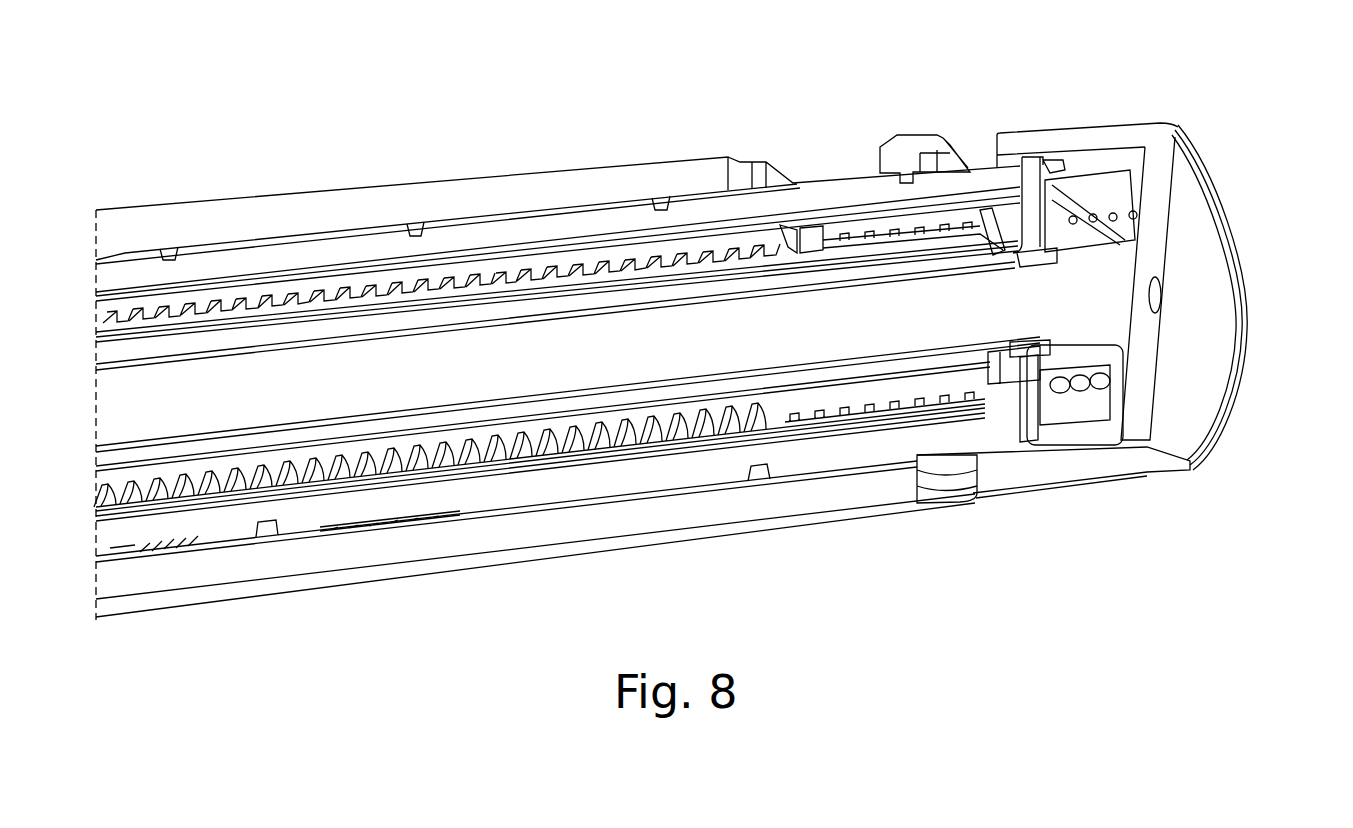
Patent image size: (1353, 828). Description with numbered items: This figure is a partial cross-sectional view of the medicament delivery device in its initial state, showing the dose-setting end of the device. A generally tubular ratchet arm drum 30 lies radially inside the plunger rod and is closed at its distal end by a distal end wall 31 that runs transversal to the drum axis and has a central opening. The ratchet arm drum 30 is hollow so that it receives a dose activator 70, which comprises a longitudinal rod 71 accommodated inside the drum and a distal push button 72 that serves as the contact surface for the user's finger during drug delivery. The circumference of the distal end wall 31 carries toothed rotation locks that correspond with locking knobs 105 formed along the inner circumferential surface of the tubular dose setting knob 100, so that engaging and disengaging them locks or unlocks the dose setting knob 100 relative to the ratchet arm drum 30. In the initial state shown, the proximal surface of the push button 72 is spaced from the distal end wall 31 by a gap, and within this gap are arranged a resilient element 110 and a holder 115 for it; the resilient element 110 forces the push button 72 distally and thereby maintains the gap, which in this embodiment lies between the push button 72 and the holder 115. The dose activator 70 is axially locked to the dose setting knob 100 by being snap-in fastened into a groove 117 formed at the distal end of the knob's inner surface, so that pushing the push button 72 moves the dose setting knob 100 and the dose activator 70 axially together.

The ratchet arm drum 30 is at (838, 268).
The distal end wall 31 is at (1005, 398).
The dose activator 70 is at (802, 290).
The longitudinal rod 71 is at (495, 372).
The push button 72 is at (1212, 262).
The dose setting knob 100 is at (1088, 138).
The locking knobs 105 is at (1053, 155).
The resilient element 110 is at (1113, 380).
The holder 115 is at (1063, 357).
The groove 117 is at (1163, 128).